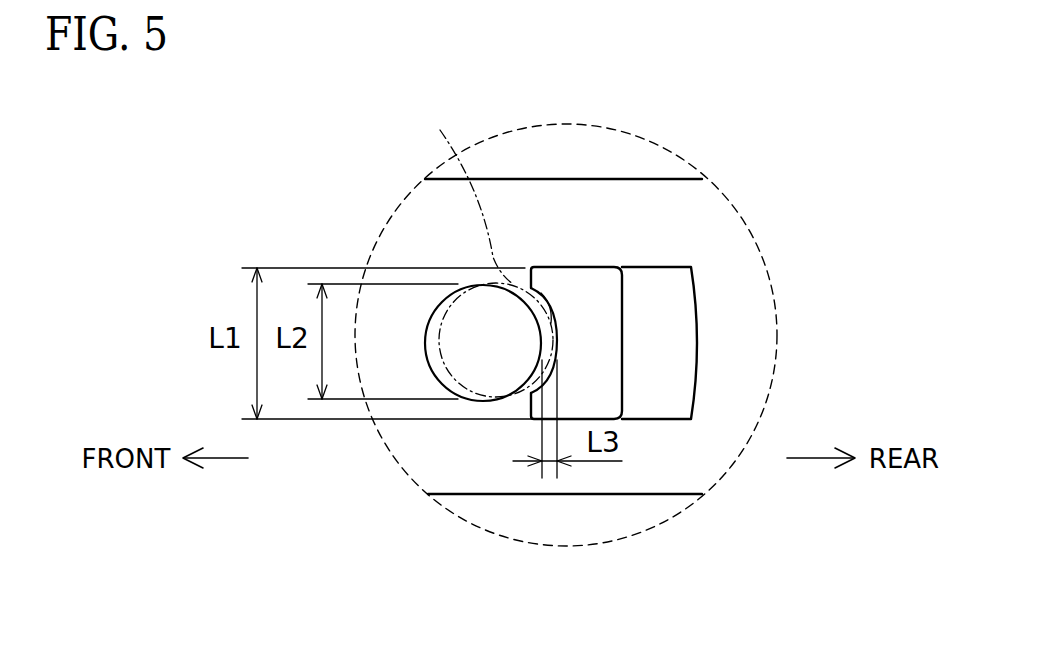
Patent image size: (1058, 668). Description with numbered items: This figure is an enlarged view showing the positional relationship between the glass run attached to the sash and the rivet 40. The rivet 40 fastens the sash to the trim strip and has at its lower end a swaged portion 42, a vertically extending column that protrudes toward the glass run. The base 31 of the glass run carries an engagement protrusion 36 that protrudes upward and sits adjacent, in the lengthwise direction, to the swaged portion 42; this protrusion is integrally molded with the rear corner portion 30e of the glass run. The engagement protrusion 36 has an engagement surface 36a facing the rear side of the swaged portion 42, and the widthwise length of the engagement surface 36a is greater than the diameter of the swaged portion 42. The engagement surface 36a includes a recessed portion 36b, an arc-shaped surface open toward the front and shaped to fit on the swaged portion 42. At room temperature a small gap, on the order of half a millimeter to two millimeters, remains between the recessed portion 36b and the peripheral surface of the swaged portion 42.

The rear corner portion 30e is at (622, 497).
The base 31 is at (660, 213).
The engagement protrusion 36 is at (585, 266).
The engagement surface 36a is at (533, 397).
The recessed portion 36b is at (541, 293).
The rivet 40 is at (444, 367).
The swaged portion 42 is at (440, 128).